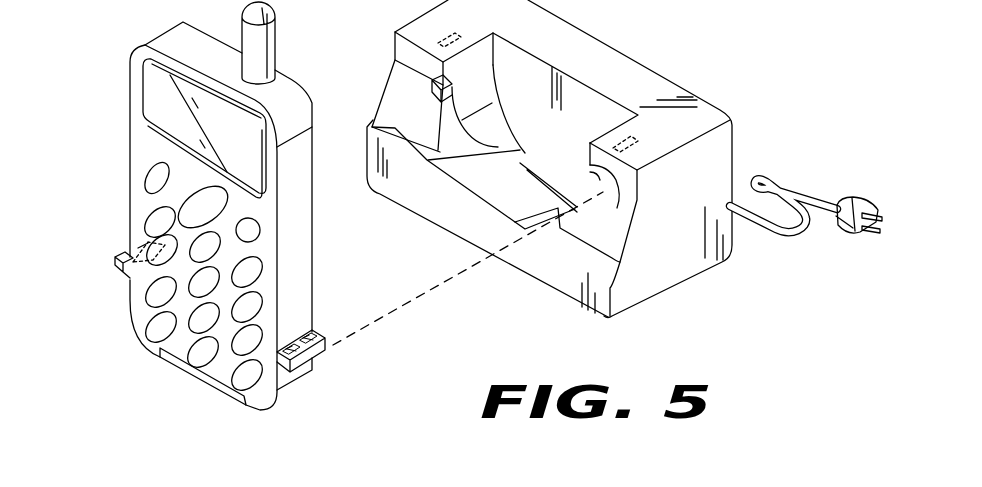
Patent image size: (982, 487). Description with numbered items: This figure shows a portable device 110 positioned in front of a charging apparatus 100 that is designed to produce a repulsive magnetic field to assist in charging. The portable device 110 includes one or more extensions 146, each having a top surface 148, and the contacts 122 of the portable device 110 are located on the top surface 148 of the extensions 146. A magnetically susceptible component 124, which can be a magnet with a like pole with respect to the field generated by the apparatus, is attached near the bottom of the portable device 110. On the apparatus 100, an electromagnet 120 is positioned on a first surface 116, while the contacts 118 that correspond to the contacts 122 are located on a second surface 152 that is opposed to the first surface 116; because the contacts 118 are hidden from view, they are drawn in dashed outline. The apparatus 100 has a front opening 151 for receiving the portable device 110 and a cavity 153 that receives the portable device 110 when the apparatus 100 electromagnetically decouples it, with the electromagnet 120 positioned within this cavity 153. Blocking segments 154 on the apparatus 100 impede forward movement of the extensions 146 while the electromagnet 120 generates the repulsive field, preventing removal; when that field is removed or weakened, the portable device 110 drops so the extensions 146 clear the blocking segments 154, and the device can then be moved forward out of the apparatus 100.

The apparatus 100 is at (755, 148).
The portable device 110 is at (111, 65).
The first surface 116 is at (514, 167).
The contacts 118 is at (451, 33).
The electromagnet 120 is at (536, 167).
The contacts 122 is at (146, 240).
The magnetically susceptible component 124 is at (204, 376).
The extensions 146 is at (116, 263).
The top surface 148 is at (124, 256).
The front opening 151 is at (512, 193).
The second surface 152 is at (475, 58).
The cavity 153 is at (498, 147).
The blocking segments 154 is at (462, 73).